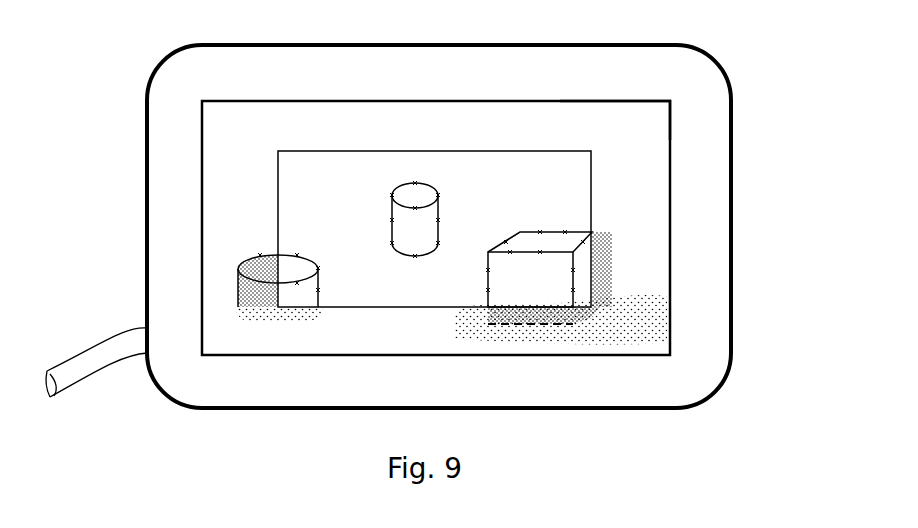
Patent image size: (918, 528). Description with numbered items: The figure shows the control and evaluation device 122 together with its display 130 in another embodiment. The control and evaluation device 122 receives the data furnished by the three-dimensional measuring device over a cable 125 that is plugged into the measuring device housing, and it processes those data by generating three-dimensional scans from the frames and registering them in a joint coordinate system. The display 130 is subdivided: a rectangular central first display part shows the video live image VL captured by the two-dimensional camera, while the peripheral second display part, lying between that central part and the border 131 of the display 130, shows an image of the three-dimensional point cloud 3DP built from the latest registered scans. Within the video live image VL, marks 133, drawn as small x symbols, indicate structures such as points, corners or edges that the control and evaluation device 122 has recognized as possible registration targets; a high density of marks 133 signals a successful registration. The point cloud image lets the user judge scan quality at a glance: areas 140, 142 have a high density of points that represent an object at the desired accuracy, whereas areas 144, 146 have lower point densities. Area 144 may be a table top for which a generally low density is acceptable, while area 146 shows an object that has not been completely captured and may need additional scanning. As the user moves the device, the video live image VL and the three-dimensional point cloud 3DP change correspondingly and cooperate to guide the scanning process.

The control and evaluation device 122 is at (268, 29).
The cable 125 is at (103, 352).
The display 130 is at (247, 128).
The border 131 is at (593, 100).
The video live image VL is at (310, 215).
The area 142 is at (243, 268).
The area 146 is at (262, 322).
The marks 133 is at (540, 229).
The area 140 is at (575, 251).
The area 144 is at (653, 313).
The three-dimensional point cloud 3DP is at (488, 320).